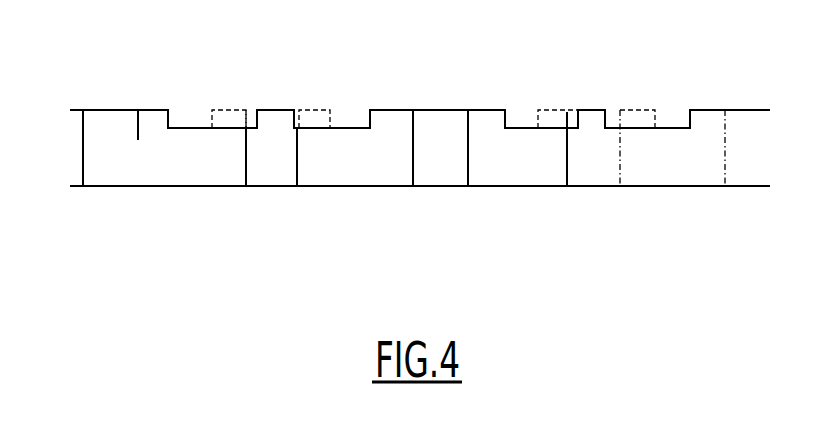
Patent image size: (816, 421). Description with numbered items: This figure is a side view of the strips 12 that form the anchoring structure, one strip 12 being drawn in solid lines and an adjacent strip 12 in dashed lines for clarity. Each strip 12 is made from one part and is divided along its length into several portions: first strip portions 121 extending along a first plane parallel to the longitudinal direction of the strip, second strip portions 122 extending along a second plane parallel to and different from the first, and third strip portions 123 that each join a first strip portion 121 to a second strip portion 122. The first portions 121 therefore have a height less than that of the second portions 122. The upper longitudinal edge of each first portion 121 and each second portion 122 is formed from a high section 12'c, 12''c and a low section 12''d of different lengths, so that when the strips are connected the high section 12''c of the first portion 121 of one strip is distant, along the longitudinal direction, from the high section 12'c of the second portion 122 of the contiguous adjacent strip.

The strip 12 is at (397, 174).
The high section 12'c is at (125, 78).
The low section 12''d is at (206, 72).
The high section 12''c is at (244, 72).
The first strip portion 121 is at (317, 120).
The second strip portion 122 is at (548, 123).
The third strip portion 123 is at (615, 122).